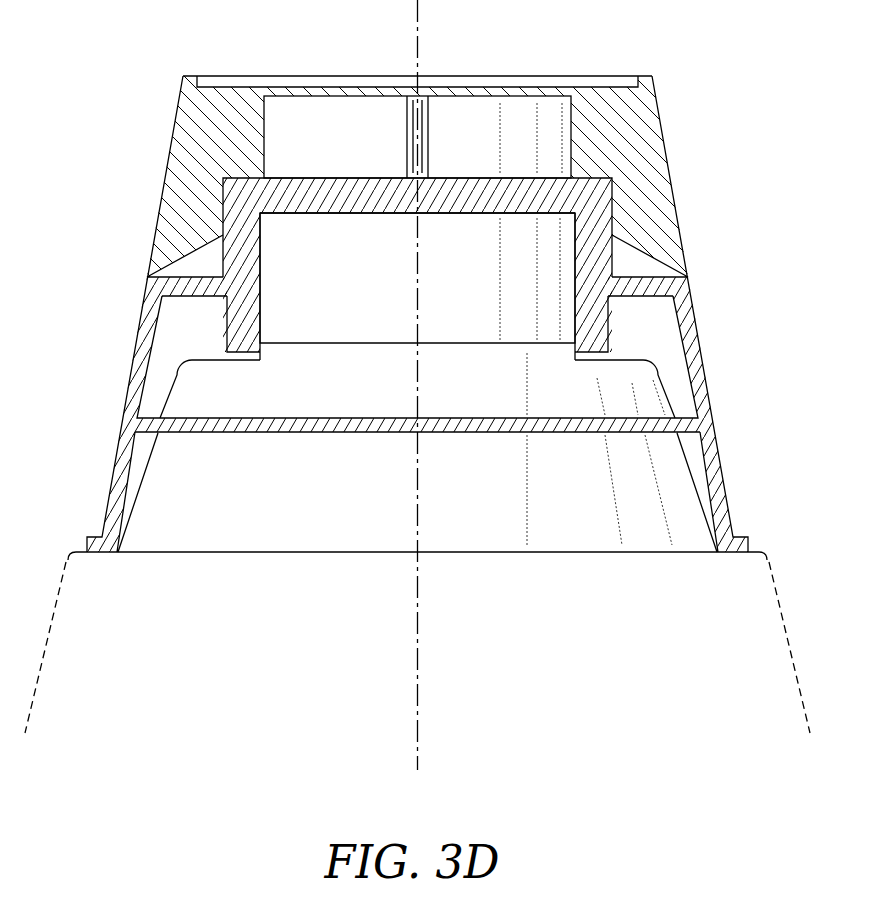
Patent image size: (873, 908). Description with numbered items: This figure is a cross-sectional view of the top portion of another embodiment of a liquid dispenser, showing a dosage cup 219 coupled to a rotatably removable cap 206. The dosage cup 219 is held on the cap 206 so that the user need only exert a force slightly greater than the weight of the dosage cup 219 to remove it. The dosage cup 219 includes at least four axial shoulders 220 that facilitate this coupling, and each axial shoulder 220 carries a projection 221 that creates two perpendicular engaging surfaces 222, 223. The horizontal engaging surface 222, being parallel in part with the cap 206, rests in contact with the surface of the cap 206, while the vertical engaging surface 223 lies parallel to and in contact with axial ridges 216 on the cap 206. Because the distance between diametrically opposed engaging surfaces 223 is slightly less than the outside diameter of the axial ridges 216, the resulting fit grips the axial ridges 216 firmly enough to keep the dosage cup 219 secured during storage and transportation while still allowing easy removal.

The cap 206 is at (287, 325).
The axial ridges 216 is at (225, 297).
The dosage cup 219 is at (259, 76).
The axial shoulders 220 is at (212, 114).
The projection 221 is at (265, 133).
The horizontal engaging surface 222 is at (242, 176).
The vertical engaging surface 223 is at (222, 228).